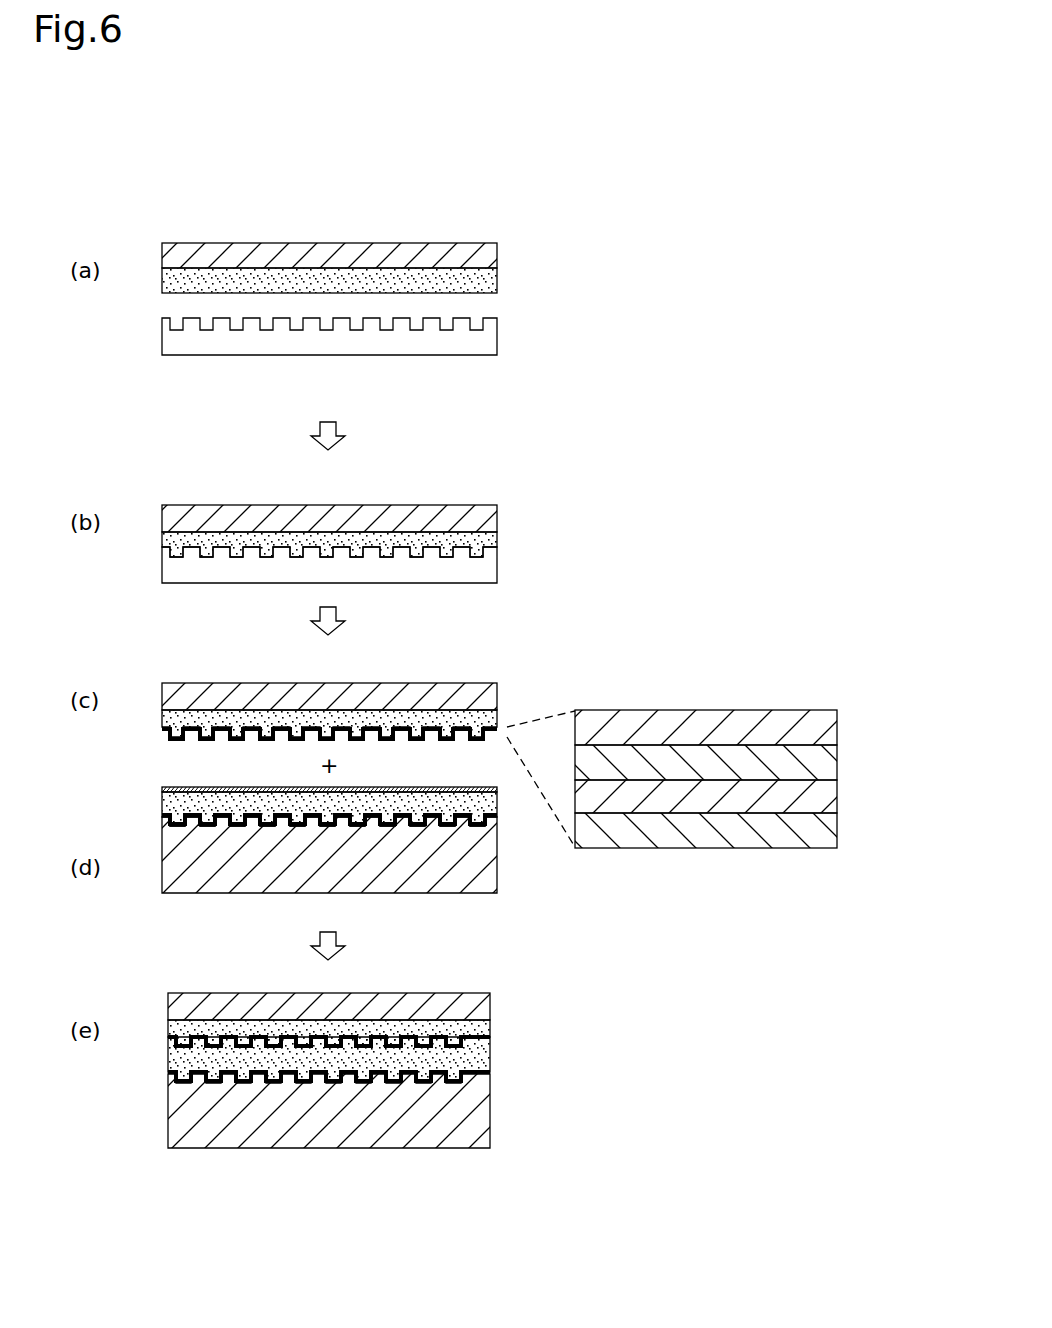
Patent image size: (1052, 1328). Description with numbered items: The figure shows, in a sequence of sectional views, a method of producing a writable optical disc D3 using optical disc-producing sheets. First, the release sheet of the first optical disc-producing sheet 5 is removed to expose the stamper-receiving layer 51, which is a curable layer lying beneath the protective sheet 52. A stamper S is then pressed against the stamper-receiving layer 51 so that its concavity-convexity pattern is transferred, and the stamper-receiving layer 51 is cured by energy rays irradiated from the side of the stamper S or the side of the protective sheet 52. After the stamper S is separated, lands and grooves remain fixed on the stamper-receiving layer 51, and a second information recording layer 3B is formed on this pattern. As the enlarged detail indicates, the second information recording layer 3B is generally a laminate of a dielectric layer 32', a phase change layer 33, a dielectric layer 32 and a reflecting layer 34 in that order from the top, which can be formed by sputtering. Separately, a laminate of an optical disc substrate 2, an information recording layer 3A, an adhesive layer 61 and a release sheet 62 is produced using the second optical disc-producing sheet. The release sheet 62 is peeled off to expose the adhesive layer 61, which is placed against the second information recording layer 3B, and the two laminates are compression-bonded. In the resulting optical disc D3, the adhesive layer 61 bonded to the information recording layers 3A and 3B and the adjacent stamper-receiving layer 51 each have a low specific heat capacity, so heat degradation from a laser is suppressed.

The first optical disc-producing sheet 5 is at (256, 220).
The protective sheet 52 is at (397, 242).
The stamper-receiving layer 51 is at (497, 275).
The stamper S is at (497, 342).
The second information recording layer 3B is at (452, 740).
The release sheet 62 is at (377, 787).
The adhesive layer 61 is at (162, 806).
The information recording layer 3A is at (162, 815).
The optical disc substrate 2 is at (497, 878).
The dielectric layer 32' is at (747, 725).
The phase change layer 33 is at (837, 762).
The dielectric layer 32 is at (741, 797).
The reflecting layer 34 is at (837, 838).
The optical disc D3 is at (234, 1171).